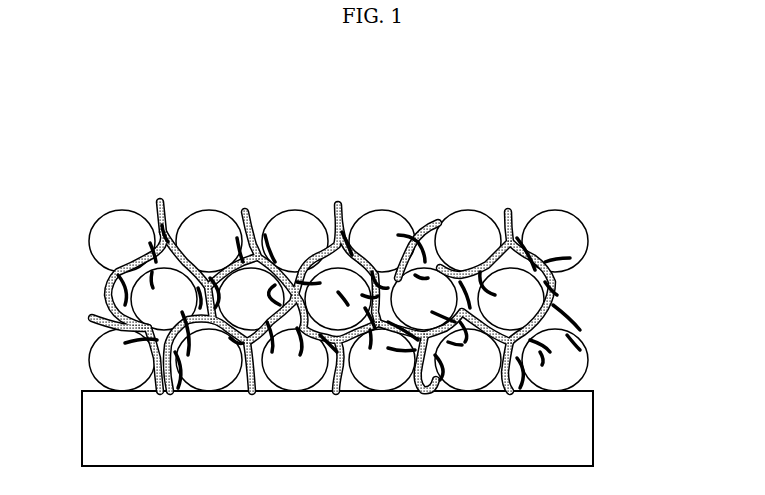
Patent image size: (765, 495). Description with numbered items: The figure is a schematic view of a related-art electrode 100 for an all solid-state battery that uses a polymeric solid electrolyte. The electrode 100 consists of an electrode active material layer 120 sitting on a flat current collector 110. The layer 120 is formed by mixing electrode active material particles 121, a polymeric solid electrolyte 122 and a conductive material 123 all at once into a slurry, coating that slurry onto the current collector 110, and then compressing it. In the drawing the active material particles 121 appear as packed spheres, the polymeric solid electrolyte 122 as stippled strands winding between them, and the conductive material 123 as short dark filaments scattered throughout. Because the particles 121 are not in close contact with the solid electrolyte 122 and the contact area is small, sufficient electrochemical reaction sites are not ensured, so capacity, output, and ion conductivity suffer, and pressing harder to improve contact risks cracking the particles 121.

The electrode 100 is at (193, 98).
The current collector 110 is at (595, 427).
The electrode active material layer 120 is at (608, 210).
The electrode active material particles 121 is at (122, 209).
The polymeric solid electrolyte 122 is at (243, 212).
The conductive material 123 is at (397, 233).